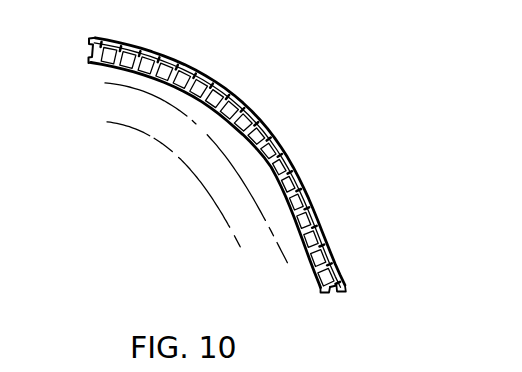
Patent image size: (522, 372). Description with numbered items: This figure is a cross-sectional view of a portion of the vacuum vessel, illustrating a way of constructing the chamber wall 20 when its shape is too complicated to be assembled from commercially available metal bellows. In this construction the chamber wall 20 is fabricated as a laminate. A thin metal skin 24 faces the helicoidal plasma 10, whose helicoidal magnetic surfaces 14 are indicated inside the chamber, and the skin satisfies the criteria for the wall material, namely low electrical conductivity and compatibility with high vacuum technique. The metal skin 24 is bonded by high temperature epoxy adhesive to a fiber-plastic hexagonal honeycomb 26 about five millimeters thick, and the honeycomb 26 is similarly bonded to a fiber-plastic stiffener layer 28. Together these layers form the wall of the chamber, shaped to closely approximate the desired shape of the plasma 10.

The helicoidal plasma 10 is at (152, 119).
The helicoidal magnetic surfaces 14 is at (238, 177).
The chamber wall 20 is at (251, 156).
The thin metal skin 24 is at (318, 284).
The fiber-plastic hexagonal honeycomb 26 is at (335, 292).
The fiber-plastic stiffener layer 28 is at (315, 211).